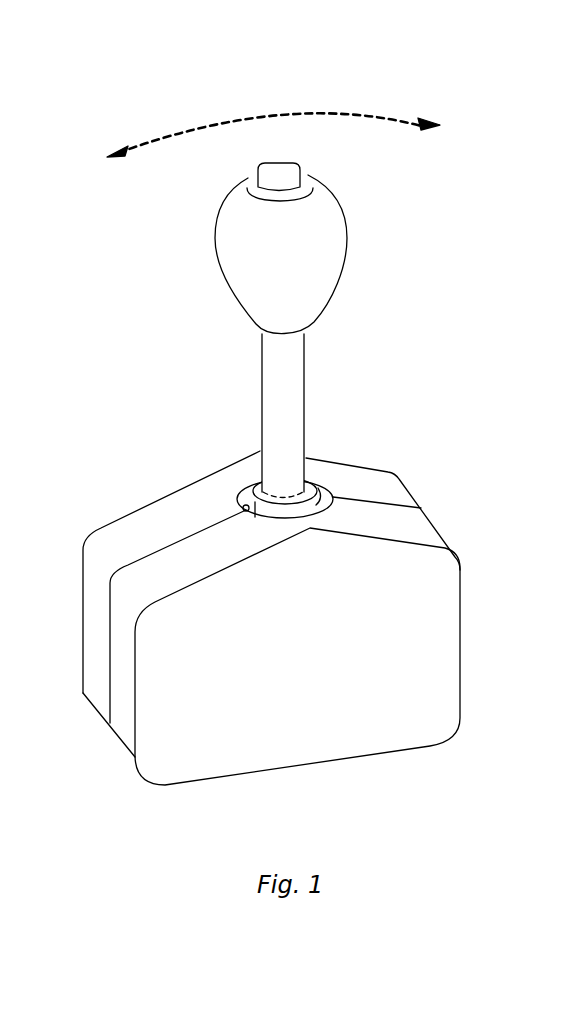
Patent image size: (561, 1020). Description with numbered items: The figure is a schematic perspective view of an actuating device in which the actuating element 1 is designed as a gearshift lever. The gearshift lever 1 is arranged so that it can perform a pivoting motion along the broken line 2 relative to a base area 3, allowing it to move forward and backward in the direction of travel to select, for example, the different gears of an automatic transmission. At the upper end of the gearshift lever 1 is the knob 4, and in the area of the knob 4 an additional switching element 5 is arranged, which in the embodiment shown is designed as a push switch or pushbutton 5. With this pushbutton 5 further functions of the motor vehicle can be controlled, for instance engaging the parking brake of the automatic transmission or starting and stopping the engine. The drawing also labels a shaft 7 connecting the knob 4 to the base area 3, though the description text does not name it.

The actuating element 1 is at (180, 362).
The broken line 2 is at (303, 115).
The base area 3 is at (460, 486).
The knob 4 is at (315, 240).
The additional switching element 5 is at (290, 170).
The shaft 7 is at (292, 372).